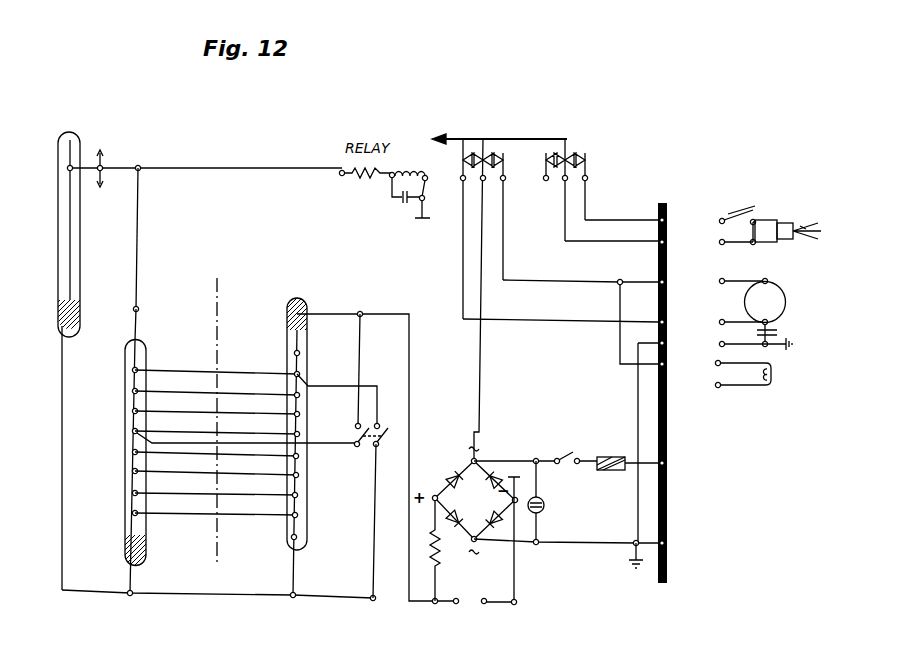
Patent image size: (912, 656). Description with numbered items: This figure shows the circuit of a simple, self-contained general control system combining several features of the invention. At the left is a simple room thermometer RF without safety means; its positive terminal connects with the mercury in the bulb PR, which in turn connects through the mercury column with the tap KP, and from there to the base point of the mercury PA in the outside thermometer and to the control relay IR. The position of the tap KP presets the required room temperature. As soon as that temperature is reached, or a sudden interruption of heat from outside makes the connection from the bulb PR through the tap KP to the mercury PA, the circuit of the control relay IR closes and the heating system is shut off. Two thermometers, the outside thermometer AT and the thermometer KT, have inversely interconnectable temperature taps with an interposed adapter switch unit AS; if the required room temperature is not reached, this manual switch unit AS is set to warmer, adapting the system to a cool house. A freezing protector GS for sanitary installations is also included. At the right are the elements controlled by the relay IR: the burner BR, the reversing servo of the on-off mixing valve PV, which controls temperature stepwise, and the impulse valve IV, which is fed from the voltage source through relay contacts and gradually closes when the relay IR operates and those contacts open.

The room thermometer RF is at (53, 345).
The tap KP is at (183, 232).
The bulb PR is at (54, 315).
The outside thermometer AT is at (222, 481).
The mercury PA is at (121, 551).
The thermometer KT is at (371, 458).
The freezing protector GS is at (380, 510).
The adapter switch unit AS is at (224, 392).
The control relay IR is at (510, 290).
The burner BR is at (795, 226).
The on-off fluid control valve PV is at (806, 313).
The impulse valve IV is at (799, 367).